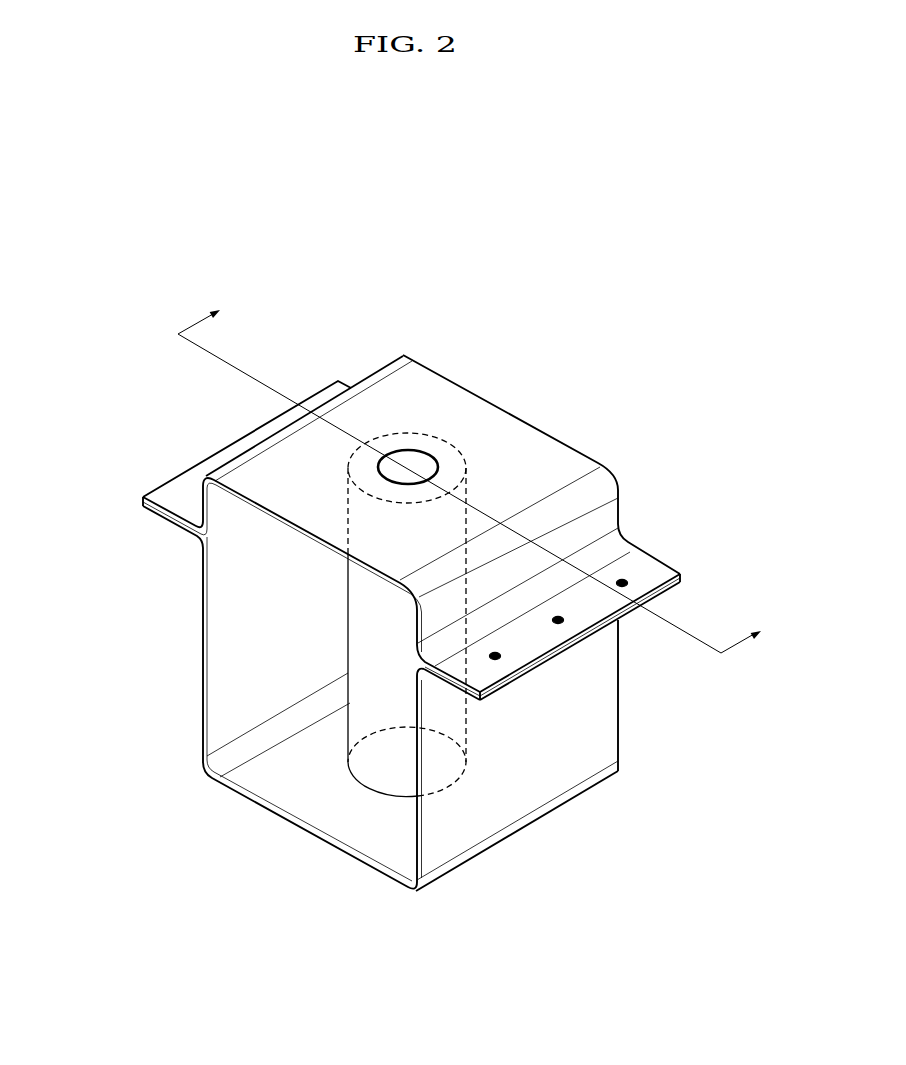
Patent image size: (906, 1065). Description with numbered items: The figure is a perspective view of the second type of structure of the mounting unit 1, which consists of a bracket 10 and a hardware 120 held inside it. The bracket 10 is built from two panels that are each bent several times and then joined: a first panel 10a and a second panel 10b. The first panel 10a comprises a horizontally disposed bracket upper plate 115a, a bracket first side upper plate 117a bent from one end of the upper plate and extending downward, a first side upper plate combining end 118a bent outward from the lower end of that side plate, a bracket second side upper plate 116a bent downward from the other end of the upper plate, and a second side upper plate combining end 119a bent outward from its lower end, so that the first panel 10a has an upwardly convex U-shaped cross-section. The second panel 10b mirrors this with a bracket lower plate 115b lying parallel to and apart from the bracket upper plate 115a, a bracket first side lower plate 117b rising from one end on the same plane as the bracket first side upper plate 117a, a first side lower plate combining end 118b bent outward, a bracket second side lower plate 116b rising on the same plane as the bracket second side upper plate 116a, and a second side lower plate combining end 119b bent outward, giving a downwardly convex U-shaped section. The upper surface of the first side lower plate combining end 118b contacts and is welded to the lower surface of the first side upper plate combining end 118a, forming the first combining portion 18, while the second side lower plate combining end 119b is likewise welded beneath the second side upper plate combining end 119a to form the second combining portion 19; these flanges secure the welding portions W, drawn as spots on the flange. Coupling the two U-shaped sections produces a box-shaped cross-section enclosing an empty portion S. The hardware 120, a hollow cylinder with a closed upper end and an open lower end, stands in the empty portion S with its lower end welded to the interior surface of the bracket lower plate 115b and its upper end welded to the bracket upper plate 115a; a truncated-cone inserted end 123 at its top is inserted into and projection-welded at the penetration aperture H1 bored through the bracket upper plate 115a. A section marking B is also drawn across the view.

The mounting unit 1 is at (413, 234).
The bracket 10 is at (633, 312).
The first panel 10a is at (378, 353).
The second panel 10b is at (491, 869).
The bracket upper plate 115a is at (513, 440).
The bracket lower plate 115b is at (353, 831).
The bracket second side upper plate 116a is at (218, 498).
The bracket second side lower plate 116b is at (203, 660).
The bracket first side upper plate 117a is at (600, 518).
The bracket first side lower plate 117b is at (603, 717).
The first side upper plate combining end 118a is at (645, 569).
The first side lower plate combining end 118b is at (664, 591).
The first combining portion 18 is at (749, 538).
The second side upper plate combining end 119a is at (181, 486).
The second side lower plate combining end 119b is at (166, 530).
The second combining portion 19 is at (72, 446).
The hardware 120 is at (357, 718).
The inserted end 123 is at (409, 457).
The penetration aperture H1 is at (433, 452).
The welding portions W is at (559, 624).
The empty portion S is at (290, 648).
The section line B- B is at (480, 472).